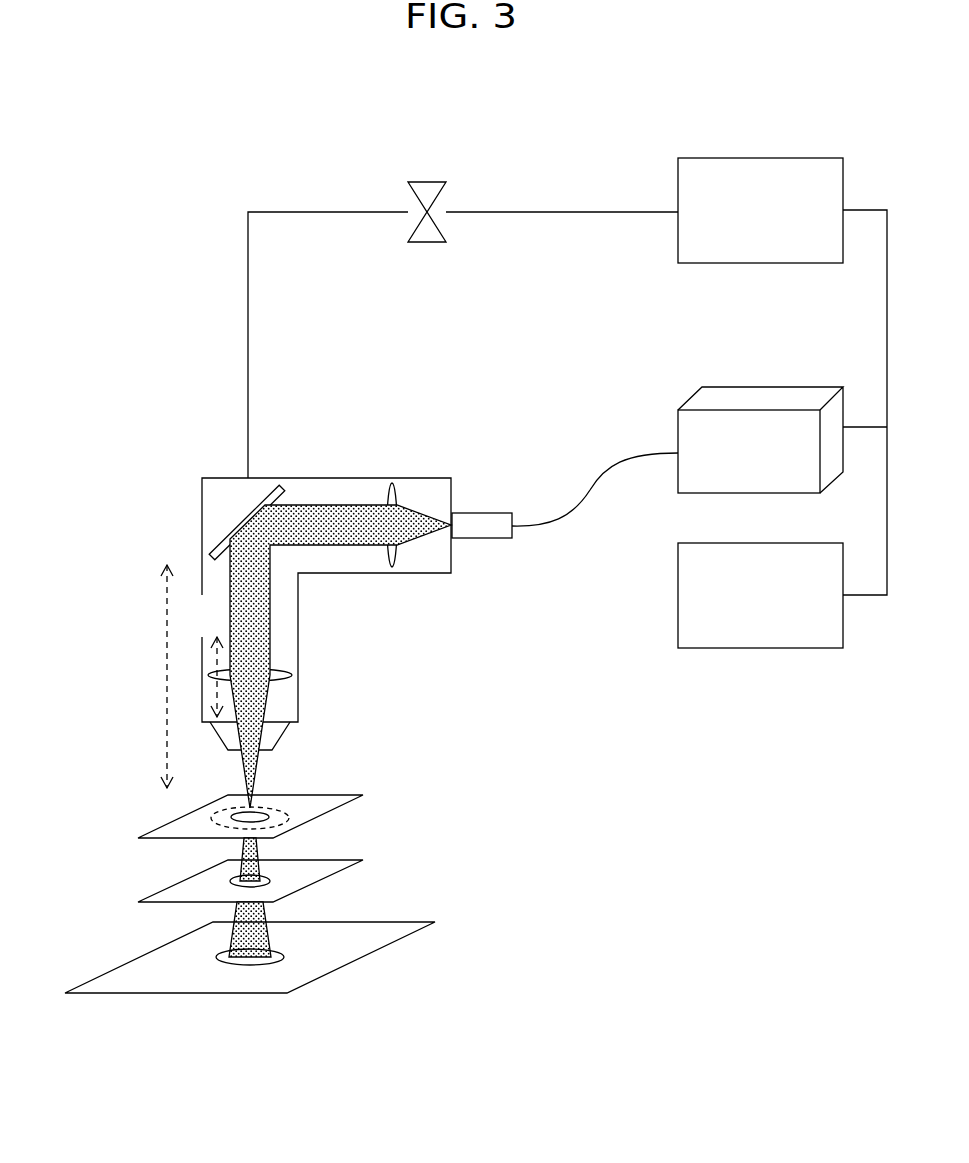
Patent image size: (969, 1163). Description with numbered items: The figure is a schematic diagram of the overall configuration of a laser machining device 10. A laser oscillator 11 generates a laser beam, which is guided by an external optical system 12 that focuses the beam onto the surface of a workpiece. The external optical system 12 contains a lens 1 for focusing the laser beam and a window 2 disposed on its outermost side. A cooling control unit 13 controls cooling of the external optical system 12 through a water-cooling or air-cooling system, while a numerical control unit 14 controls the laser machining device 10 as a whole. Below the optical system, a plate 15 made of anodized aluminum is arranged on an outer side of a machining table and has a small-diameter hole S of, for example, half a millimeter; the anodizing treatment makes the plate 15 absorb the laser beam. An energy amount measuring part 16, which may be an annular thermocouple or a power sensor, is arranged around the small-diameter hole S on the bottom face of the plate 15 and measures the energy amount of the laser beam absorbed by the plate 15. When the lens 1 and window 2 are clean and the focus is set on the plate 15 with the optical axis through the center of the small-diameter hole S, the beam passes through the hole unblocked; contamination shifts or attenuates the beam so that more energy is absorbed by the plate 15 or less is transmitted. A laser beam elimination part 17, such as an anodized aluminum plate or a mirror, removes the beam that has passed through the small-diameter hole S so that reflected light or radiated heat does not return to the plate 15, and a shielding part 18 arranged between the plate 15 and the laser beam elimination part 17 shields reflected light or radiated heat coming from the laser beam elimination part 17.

The laser machining device 10 is at (113, 177).
The laser oscillator 11 is at (795, 387).
The external optical system 12 is at (202, 495).
The cooling control unit 13 is at (795, 158).
The numerical control unit 14 is at (712, 648).
The lens 1 is at (287, 668).
The window 2 is at (266, 758).
The plate 15 is at (318, 803).
The energy amount measuring part 16 is at (290, 817).
The laser beam elimination part 17 is at (278, 950).
The shielding part 18 is at (177, 893).
The small-diameter hole S is at (226, 812).